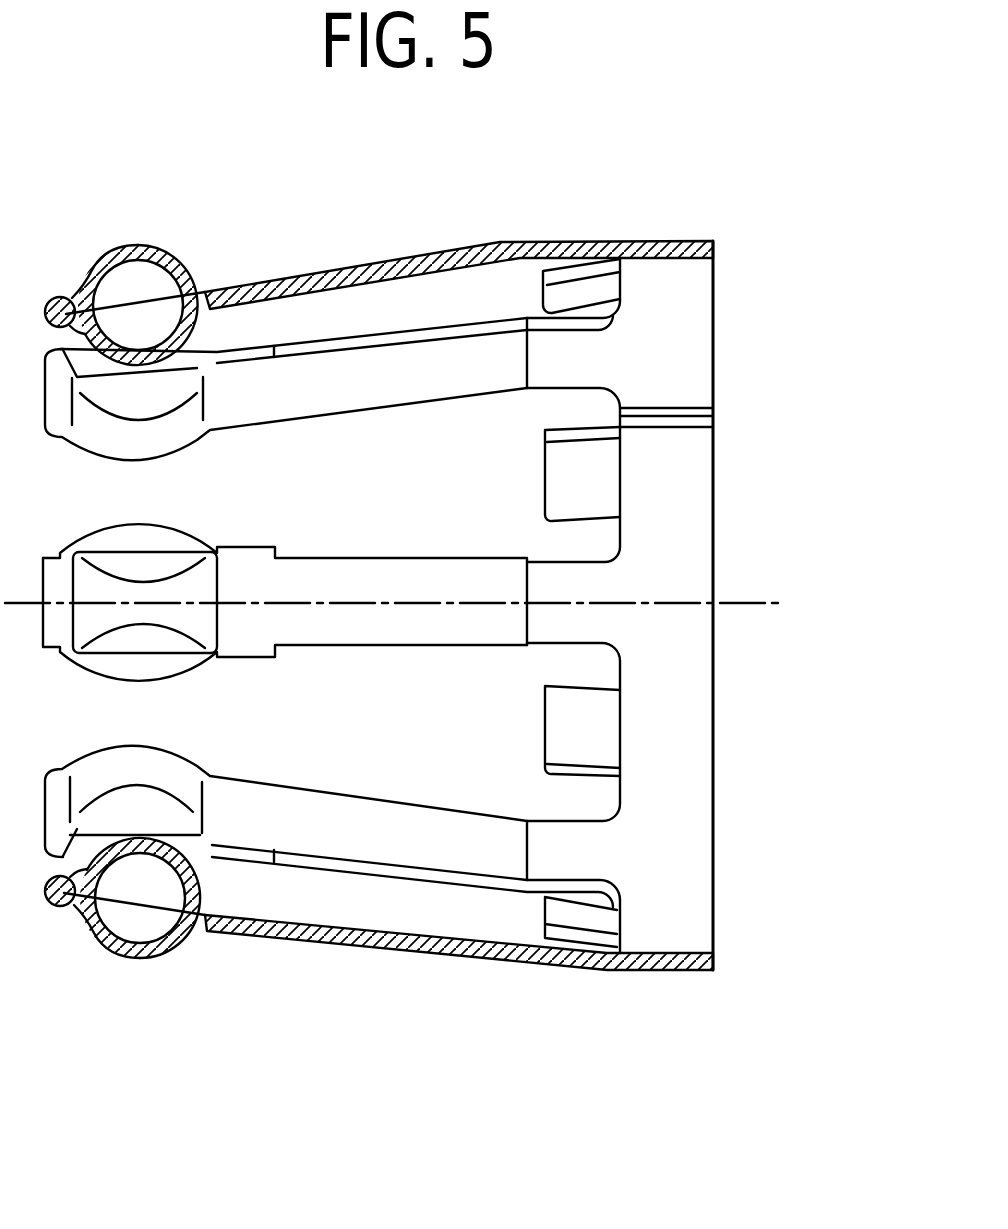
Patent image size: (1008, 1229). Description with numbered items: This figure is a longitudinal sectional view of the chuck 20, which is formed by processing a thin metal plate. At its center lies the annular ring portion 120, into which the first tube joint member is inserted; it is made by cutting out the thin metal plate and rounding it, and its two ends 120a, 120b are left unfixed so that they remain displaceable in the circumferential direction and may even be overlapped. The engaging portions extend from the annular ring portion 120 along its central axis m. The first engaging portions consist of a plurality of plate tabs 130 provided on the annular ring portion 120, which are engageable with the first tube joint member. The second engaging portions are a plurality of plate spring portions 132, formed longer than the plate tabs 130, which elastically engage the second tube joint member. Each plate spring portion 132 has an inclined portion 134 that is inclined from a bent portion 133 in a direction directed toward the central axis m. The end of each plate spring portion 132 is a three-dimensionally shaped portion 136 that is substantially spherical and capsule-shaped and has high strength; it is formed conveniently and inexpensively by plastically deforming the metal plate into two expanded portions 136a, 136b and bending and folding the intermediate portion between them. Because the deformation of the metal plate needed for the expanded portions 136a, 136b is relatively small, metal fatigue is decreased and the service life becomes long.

The chuck 20 is at (105, 145).
The annular ring portion 120 is at (685, 342).
The end of annular ring portion 120a is at (686, 407).
The end of annular ring portion 120b is at (645, 412).
The plate tab 130 is at (590, 483).
The bent portion 133 is at (530, 241).
The plate spring portion 132 is at (431, 955).
The inclined portion 134 is at (319, 940).
The three-dimensionally shaped portion 136 is at (102, 955).
The expanded portion 136a is at (163, 955).
The expanded portion 136b is at (120, 837).
The central axis m is at (815, 603).